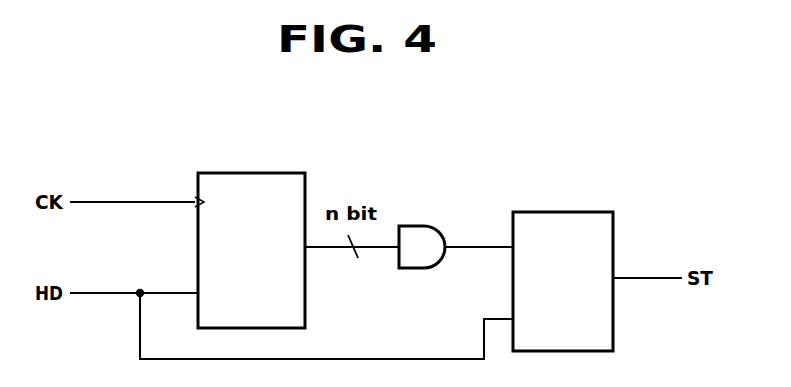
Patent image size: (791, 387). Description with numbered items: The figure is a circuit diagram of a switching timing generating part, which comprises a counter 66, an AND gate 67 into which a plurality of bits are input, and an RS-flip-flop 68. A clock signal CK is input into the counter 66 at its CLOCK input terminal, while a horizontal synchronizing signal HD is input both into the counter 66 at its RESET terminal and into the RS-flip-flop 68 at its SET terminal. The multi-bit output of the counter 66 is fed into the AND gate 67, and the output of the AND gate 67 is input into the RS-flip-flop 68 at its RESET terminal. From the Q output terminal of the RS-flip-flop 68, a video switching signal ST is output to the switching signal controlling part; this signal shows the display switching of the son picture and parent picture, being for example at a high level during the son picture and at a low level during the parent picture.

The counter 66 is at (276, 173).
The AND gate 67 is at (418, 226).
The RS-flip-flop 68 is at (578, 212).